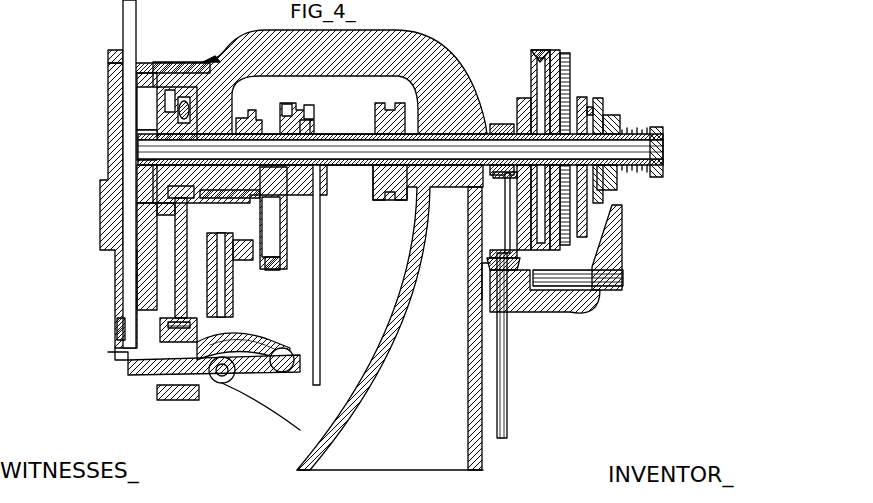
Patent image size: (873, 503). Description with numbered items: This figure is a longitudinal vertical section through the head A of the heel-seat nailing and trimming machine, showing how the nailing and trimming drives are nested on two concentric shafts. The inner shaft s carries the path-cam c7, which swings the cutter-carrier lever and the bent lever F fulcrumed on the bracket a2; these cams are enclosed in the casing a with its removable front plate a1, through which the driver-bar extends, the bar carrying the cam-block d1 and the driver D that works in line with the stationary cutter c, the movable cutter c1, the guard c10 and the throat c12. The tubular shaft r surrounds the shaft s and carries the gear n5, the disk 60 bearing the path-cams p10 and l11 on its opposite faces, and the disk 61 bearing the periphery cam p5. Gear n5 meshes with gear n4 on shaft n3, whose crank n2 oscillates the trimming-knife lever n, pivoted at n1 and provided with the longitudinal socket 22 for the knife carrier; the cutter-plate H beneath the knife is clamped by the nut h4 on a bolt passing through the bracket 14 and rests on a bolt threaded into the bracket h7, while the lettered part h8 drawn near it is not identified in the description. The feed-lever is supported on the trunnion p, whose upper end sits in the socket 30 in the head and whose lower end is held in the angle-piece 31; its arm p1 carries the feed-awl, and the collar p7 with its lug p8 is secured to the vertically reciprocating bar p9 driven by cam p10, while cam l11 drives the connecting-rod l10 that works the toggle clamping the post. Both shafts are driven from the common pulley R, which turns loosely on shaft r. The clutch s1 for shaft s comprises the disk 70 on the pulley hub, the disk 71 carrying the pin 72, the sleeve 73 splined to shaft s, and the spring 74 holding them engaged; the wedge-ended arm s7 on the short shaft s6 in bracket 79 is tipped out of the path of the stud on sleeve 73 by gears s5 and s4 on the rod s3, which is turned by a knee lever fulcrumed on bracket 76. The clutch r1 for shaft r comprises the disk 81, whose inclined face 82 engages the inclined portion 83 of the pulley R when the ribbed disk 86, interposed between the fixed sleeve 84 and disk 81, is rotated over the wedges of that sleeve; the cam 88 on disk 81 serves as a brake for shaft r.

The head A is at (445, 42).
The bent lever F is at (188, 58).
The casing a is at (122, 22).
The removable front plate a1 is at (110, 128).
The bracket a2 is at (210, 58).
The cam-block d1 is at (145, 143).
The path cam c7 is at (157, 180).
The shaft s is at (630, 148).
The gear n5 is at (249, 109).
The path-cam p10 is at (282, 104).
The disk 60 is at (296, 101).
The path-cam l11 is at (316, 108).
The tubular shaft r is at (332, 133).
The periphery cam p5 is at (385, 100).
The disk 61 is at (373, 122).
The crank n2 is at (167, 233).
The shaft n3 is at (178, 222).
The trunnion p is at (180, 290).
The longitudinal socket 22 is at (193, 328).
The gear n4 is at (282, 218).
The socket 30 is at (262, 232).
The vertically-reciprocating bar p9 is at (285, 250).
The collar p7 is at (220, 265).
The arm p1 is at (236, 280).
The lug p8 is at (262, 280).
The angle-piece 31 is at (240, 313).
The connecting-rod l10 is at (322, 318).
The trimming-knife lever n is at (272, 338).
The pivot n1 is at (296, 356).
The nut h4 is at (235, 374).
The cutter-plate H is at (140, 380).
The bracket h7 is at (165, 400).
The part h8 is at (212, 392).
The bracket 14 is at (208, 391).
The stationary cutter c is at (110, 312).
The driver D is at (117, 328).
The movable cutter c1 is at (112, 338).
The guard c10 is at (115, 350).
The throat c12 is at (125, 362).
The sleeve 84 is at (520, 130).
The disk 86 is at (494, 124).
The clutch r1 is at (505, 112).
The disk 81 is at (530, 52).
The inclined peripheral face 82 is at (532, 48).
The pulley R is at (553, 48).
The inclined portion 83 is at (565, 50).
The disk 70 is at (584, 95).
The clutch s1 is at (591, 105).
The pin 72 is at (605, 100).
The disk 71 is at (610, 118).
The sleeve 73 is at (612, 182).
The spring 74 is at (647, 126).
The bracket 76 is at (517, 213).
The cam 88 is at (499, 200).
The connecting-rod s3 is at (515, 345).
The gear s4 is at (488, 262).
The bracket 79 is at (555, 312).
The gear s5 is at (591, 300).
The short shaft s6 is at (624, 278).
The arm s7 is at (620, 248).